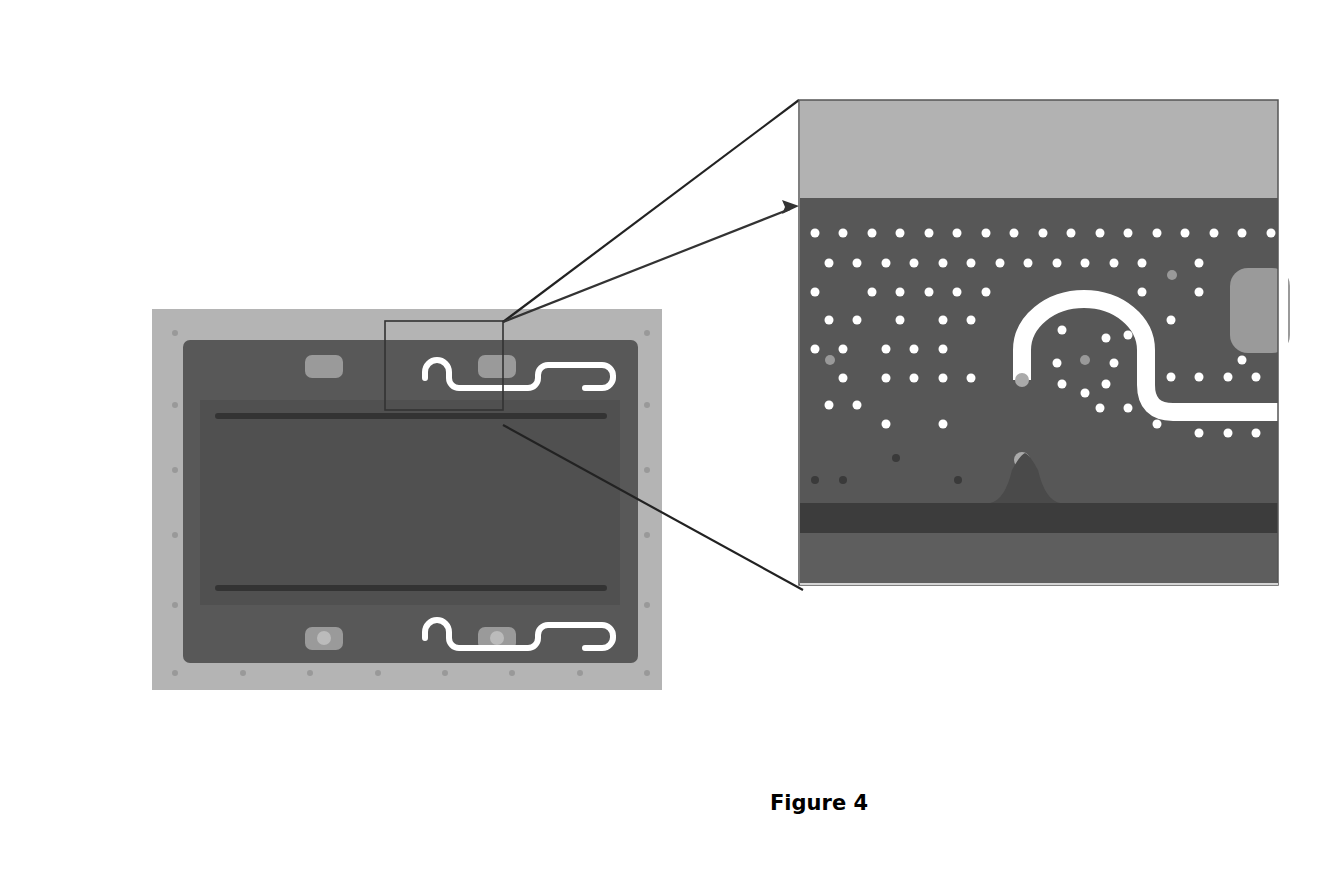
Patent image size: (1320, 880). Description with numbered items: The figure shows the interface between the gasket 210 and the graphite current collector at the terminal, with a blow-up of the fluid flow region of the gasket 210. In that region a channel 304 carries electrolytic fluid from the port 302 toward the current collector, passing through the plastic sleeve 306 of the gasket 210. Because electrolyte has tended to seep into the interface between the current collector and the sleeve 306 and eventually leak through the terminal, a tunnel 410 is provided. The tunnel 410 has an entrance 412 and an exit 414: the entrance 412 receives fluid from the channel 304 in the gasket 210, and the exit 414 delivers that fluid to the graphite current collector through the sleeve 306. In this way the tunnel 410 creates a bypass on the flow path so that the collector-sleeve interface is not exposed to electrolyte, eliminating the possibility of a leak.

The gasket 210 is at (298, 300).
The port 302 is at (1258, 310).
The channel 304 is at (1048, 296).
The plastic sleeve 306 is at (800, 511).
The tunnel 410 is at (1025, 425).
The entrance 412 is at (1022, 388).
The exit 414 is at (1028, 466).